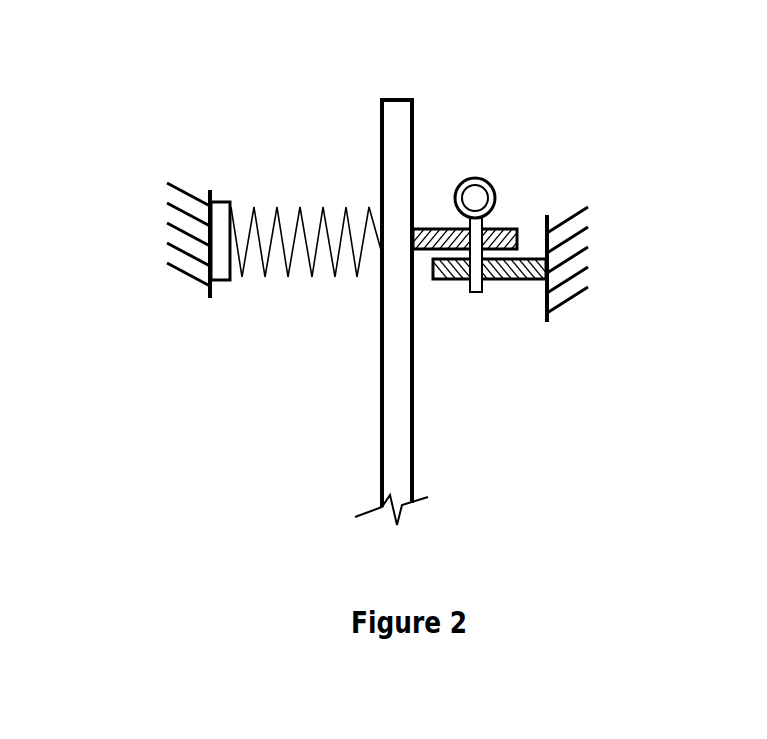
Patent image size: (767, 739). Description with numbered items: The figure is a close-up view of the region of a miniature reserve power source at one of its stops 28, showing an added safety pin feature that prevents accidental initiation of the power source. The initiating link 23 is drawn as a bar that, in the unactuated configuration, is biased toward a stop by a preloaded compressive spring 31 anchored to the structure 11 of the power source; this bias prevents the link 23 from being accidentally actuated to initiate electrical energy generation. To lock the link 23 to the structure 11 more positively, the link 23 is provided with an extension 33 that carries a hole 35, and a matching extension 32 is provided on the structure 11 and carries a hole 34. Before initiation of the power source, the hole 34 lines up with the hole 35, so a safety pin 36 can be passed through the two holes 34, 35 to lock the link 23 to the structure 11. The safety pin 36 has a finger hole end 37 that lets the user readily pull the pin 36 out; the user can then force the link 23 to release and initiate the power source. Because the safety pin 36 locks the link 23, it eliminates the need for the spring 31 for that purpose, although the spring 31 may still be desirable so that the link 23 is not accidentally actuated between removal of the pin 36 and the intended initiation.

The structure 11 is at (186, 243).
The initiating link 23 is at (393, 392).
The stop 28 is at (220, 202).
The preloaded compressive spring 31 is at (293, 207).
The matching extension 32 is at (518, 281).
The extension 33 is at (510, 228).
The hole 34 is at (467, 282).
The hole 35 is at (462, 226).
The safety pin 36 is at (476, 293).
The finger hole end 37 is at (484, 178).